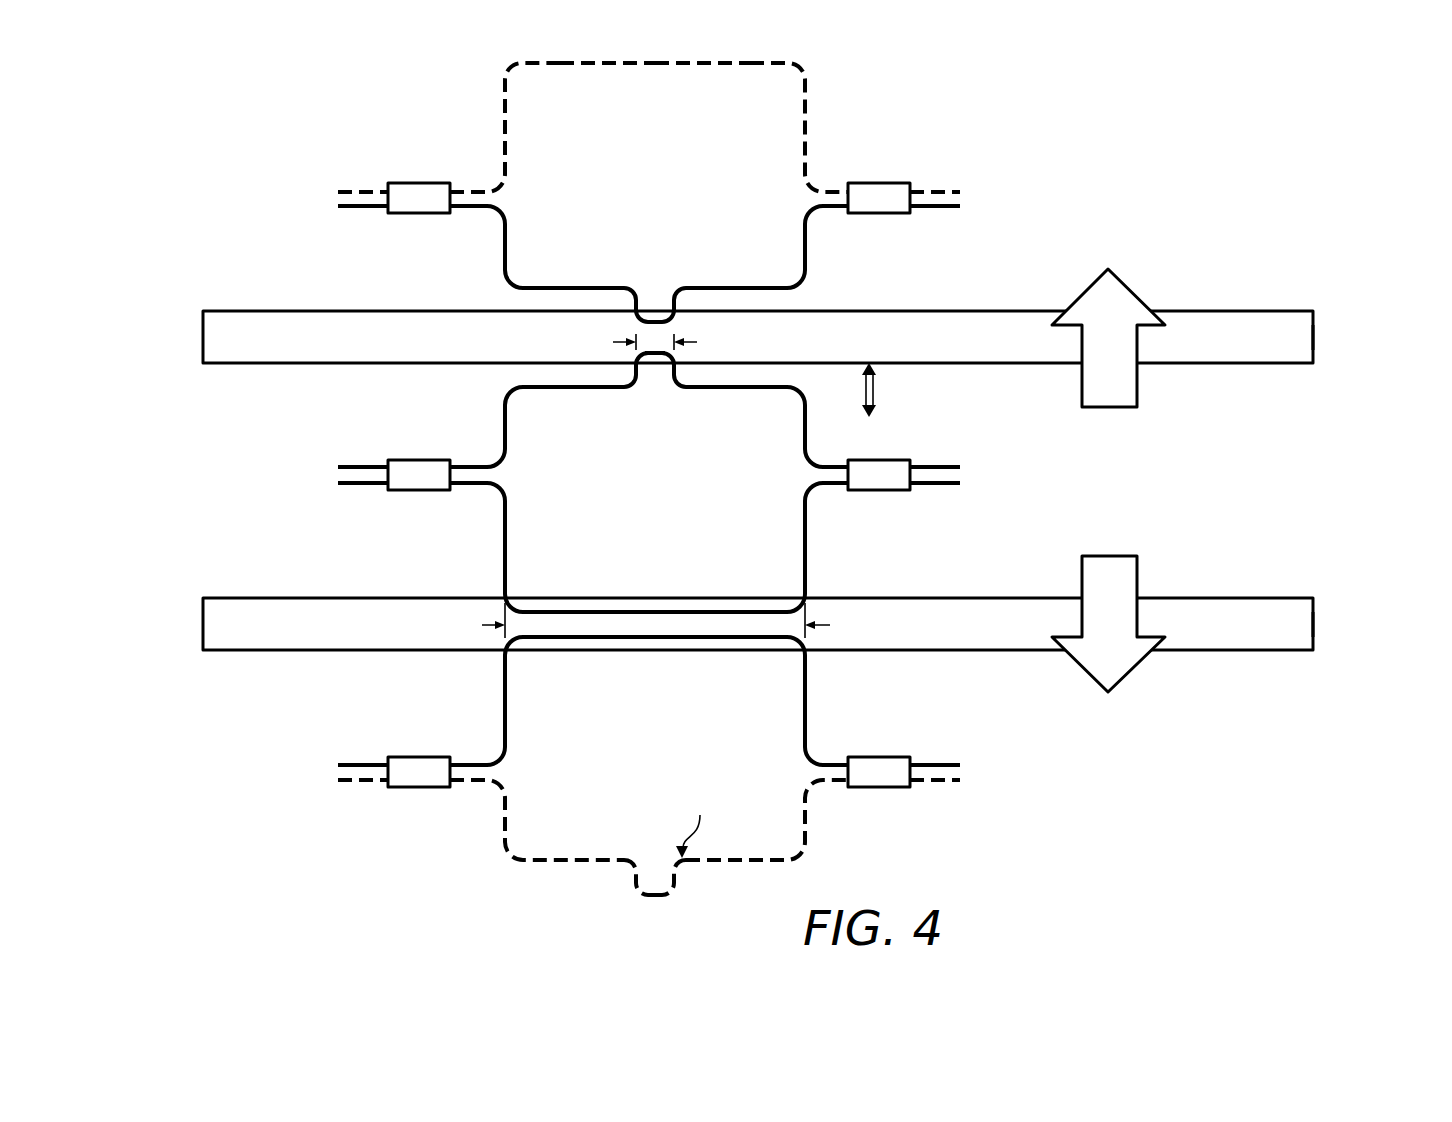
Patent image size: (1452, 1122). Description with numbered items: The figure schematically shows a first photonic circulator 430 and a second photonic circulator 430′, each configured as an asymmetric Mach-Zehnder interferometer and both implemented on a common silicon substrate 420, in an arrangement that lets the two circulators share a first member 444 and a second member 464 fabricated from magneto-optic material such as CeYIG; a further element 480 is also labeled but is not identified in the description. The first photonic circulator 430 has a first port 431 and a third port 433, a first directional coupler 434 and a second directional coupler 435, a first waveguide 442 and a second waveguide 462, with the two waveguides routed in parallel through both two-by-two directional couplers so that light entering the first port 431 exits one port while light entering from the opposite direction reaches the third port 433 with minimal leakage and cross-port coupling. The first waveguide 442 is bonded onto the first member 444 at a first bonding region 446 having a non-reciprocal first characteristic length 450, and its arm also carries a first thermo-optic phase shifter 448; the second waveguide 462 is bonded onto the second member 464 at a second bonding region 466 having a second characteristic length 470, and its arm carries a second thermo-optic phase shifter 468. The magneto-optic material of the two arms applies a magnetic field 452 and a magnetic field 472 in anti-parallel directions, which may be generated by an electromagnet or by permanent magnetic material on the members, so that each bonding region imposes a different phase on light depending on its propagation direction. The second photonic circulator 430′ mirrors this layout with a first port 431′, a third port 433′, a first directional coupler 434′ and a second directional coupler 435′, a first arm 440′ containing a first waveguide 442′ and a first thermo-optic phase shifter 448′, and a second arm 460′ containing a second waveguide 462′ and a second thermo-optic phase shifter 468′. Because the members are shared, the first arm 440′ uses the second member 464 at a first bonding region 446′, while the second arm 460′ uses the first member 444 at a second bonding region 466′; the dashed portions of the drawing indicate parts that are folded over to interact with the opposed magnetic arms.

The silicon substrate 420 is at (1232, 483).
The first photonic circulator 430 is at (265, 487).
The second photonic circulator 430′ is at (1268, 135).
The first port 431 is at (358, 466).
The first port 431′ is at (358, 190).
The third port 433 is at (358, 485).
The third port 433′ is at (358, 208).
The first directional coupler 434 is at (418, 490).
The first directional coupler 434′ is at (418, 183).
The second directional coupler 435 is at (879, 490).
The second directional coupler 435′ is at (879, 183).
The first arm 440′ is at (195, 622).
The first waveguide 442 is at (505, 420).
The first waveguide 442′ is at (505, 97).
The first member 444 is at (1313, 340).
The first bonding region 446 is at (684, 398).
The first bonding region 446′ is at (685, 75).
The first thermo-optic phase shifter 448 is at (625, 388).
The first thermo-optic phase shifter 448′ is at (625, 66).
The first characteristic length 450 is at (655, 355).
The magnetic field 452 is at (1108, 338).
The second arm 460′ is at (195, 335).
The second waveguide 462 is at (505, 560).
The second waveguide 462′ is at (505, 252).
The second member 464 is at (1313, 628).
The second bonding region 466 is at (684, 600).
The second bonding region 466′ is at (686, 323).
The second thermo-optic phase shifter 468 is at (625, 612).
The second thermo-optic phase shifter 468′ is at (625, 288).
The second characteristic length 470 is at (679, 620).
The magnetic field 472 is at (1108, 624).
The optical device 480 is at (1348, 473).